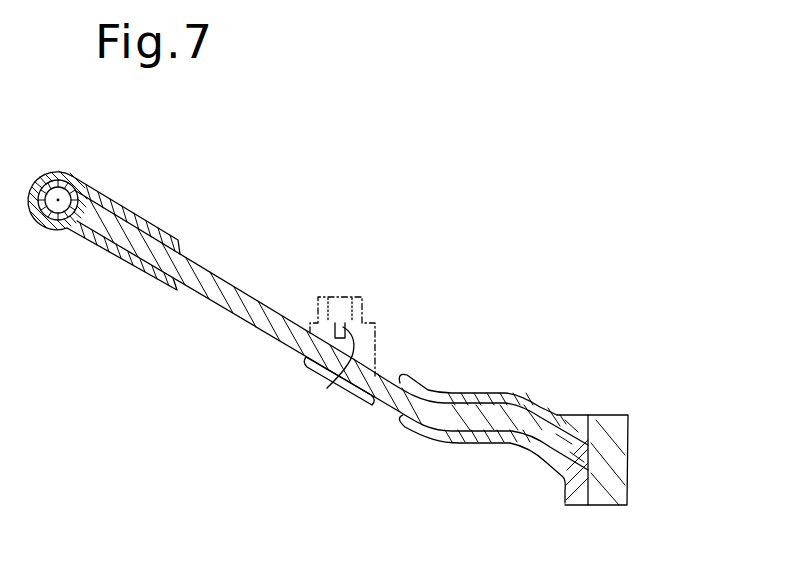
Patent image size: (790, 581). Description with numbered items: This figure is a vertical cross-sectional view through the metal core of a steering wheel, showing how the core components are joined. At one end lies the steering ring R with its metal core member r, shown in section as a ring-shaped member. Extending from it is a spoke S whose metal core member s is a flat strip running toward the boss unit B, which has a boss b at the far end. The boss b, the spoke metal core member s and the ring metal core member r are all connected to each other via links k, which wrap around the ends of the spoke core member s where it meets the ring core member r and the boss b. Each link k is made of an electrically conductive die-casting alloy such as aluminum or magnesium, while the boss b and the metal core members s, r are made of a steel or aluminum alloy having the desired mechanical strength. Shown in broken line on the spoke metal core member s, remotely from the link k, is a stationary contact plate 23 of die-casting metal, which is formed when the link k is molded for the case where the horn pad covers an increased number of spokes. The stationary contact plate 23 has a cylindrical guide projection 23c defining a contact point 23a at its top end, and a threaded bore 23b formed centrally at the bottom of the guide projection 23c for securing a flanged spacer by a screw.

The steering ring R is at (66, 156).
The metal core member of steering ring r is at (45, 228).
The link k is at (110, 197).
The spoke S is at (243, 334).
The metal core member of spoke s is at (231, 284).
The boss unit B is at (518, 335).
The boss b is at (603, 430).
The stationary contact plate 23 is at (377, 327).
The contact point 23a is at (323, 297).
The threaded bore 23b is at (329, 382).
The cylindrical guide projection 23c is at (363, 300).